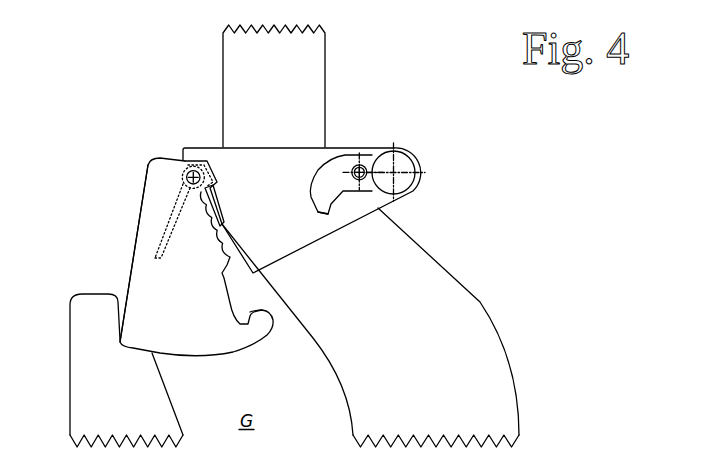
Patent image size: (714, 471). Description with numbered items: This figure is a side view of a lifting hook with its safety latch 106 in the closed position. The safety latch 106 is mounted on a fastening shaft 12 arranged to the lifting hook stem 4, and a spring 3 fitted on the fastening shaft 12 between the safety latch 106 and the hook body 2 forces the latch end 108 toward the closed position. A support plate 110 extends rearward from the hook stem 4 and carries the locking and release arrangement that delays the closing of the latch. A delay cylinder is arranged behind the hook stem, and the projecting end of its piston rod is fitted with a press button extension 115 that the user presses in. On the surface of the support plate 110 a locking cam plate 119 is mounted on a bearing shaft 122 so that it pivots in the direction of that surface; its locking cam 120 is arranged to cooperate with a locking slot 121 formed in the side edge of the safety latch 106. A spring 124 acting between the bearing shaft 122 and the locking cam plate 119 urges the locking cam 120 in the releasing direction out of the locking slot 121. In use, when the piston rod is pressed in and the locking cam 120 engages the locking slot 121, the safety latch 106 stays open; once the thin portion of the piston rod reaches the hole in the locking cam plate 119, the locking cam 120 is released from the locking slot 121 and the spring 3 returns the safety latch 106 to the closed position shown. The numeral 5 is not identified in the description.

The hook body 2 is at (480, 301).
The spring 3 is at (158, 241).
The lifting hook stem 4 is at (328, 53).
The base 5 is at (70, 333).
The fastening shaft 12 is at (185, 160).
The safety latch 106 is at (122, 253).
The latch end 108 is at (143, 298).
The support plate 110 is at (267, 158).
The press button extension 115 is at (413, 150).
The locking cam plate 119 is at (343, 154).
The locking cam 120 is at (331, 216).
The locking slot 121 is at (263, 294).
The bearing shaft 122 is at (358, 164).
The spring 124 is at (372, 155).